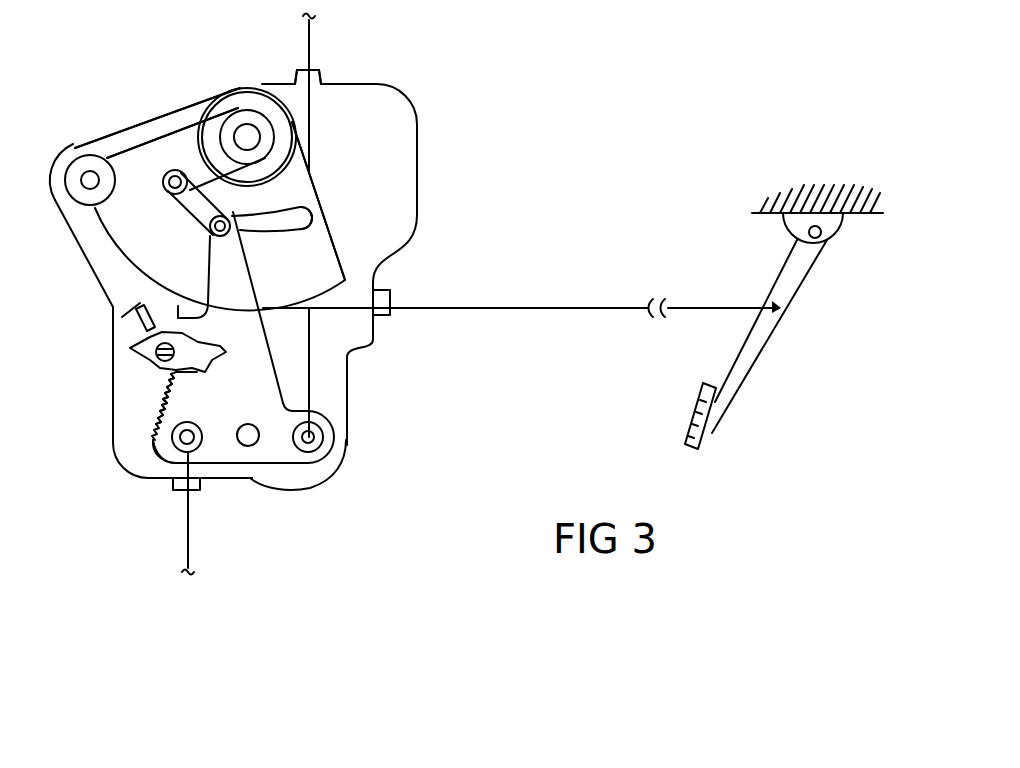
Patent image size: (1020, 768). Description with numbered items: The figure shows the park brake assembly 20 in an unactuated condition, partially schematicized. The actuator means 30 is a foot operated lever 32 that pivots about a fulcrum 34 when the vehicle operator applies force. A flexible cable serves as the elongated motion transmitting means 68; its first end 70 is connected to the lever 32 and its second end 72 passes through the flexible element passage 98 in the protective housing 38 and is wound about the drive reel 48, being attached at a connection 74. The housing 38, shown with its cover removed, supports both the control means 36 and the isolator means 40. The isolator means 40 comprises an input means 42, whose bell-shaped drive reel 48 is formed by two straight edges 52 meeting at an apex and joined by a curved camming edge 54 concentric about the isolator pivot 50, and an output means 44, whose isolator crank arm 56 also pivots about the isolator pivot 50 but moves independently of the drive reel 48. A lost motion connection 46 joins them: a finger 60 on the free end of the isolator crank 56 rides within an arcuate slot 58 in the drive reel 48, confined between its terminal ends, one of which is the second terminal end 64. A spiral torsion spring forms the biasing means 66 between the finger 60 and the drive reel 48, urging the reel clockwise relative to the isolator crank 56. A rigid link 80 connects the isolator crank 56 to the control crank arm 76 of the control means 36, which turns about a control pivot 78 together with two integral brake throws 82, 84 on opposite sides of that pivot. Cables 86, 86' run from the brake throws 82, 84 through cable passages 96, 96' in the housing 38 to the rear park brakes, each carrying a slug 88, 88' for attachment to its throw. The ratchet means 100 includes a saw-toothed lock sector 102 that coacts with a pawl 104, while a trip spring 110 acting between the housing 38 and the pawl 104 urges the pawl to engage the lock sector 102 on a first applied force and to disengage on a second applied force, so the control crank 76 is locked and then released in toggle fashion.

The assembly 20 is at (540, 110).
The actuator means 30 is at (785, 346).
The lever 32 is at (712, 435).
The fulcrum 34 is at (823, 240).
The control means 36 is at (140, 452).
The housing 38 is at (418, 172).
The isolator means 40 is at (247, 78).
The input means 42 is at (125, 130).
The output means 44 is at (180, 130).
The lost motion connection 46 is at (286, 240).
The drive reel 48 is at (330, 249).
The isolator pivot 50 is at (262, 139).
The straight edges 52 is at (193, 106).
The camming edge 54 is at (112, 288).
The isolator crank arm 56 is at (165, 172).
The arcuate slot 58 is at (255, 234).
The finger 60 is at (164, 192).
The second terminal end 64 is at (292, 200).
The biasing means 66 is at (226, 196).
The motion transmitting means 68 is at (512, 307).
The first end 70 is at (771, 300).
The second end 72 is at (90, 205).
The connection 74 is at (80, 147).
The control crank arm 76 is at (206, 262).
The control pivot 78 is at (248, 447).
The rigid link 80 is at (196, 218).
The brake throw 82 is at (213, 476).
The brake throw 84 is at (302, 467).
The cable 86 is at (155, 515).
The cable 86' is at (350, 225).
The slug 88 is at (200, 414).
The slug 88' is at (359, 437).
The cable passage 96 is at (159, 508).
The cable passage 96' is at (348, 66).
The flexible element passage 98 is at (391, 297).
The ratchet means 100 is at (135, 417).
The lock sector 102 is at (152, 402).
The pawl 104 is at (150, 345).
The trip spring 110 is at (145, 308).